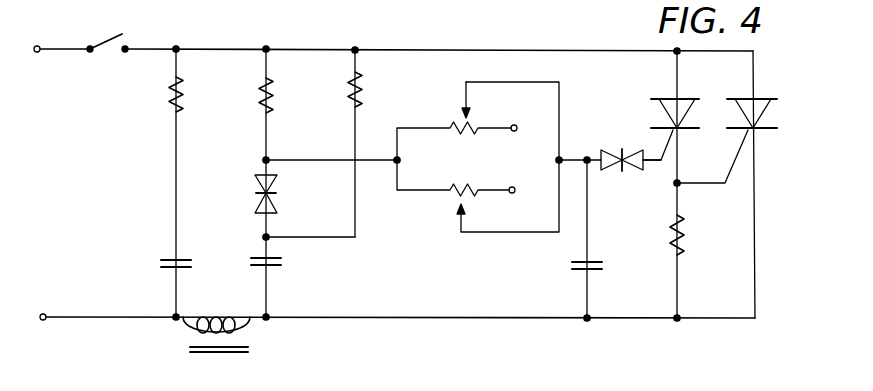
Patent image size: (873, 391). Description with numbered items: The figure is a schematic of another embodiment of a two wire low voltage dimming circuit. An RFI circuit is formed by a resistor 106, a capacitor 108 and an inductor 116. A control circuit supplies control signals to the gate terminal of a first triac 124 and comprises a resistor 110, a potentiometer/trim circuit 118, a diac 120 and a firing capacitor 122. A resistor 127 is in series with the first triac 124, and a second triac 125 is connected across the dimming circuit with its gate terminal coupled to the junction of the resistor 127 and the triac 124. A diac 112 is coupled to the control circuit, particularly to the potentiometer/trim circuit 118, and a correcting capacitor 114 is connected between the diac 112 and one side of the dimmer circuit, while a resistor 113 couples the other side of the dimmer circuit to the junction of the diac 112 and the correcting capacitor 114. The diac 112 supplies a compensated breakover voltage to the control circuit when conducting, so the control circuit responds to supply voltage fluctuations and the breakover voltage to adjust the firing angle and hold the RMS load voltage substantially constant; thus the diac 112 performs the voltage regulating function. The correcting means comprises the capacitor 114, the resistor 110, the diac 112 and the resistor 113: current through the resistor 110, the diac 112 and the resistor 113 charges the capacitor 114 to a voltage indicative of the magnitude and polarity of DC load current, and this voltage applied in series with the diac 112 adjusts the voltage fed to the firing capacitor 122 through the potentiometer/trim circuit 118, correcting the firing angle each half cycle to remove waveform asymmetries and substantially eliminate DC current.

The resistor 106 is at (174, 104).
The capacitor 108 is at (174, 266).
The resistor 110 is at (262, 94).
The diac 112 is at (258, 206).
The resistor 113 is at (362, 100).
The correcting capacitor 114 is at (272, 270).
The inductor 116 is at (232, 362).
The potentiometer/trim circuit 118 is at (453, 193).
The diac 120 is at (634, 150).
The firing capacitor 122 is at (594, 270).
The first triac 124 is at (670, 97).
The second triac 125 is at (757, 97).
The resistor 127 is at (683, 251).